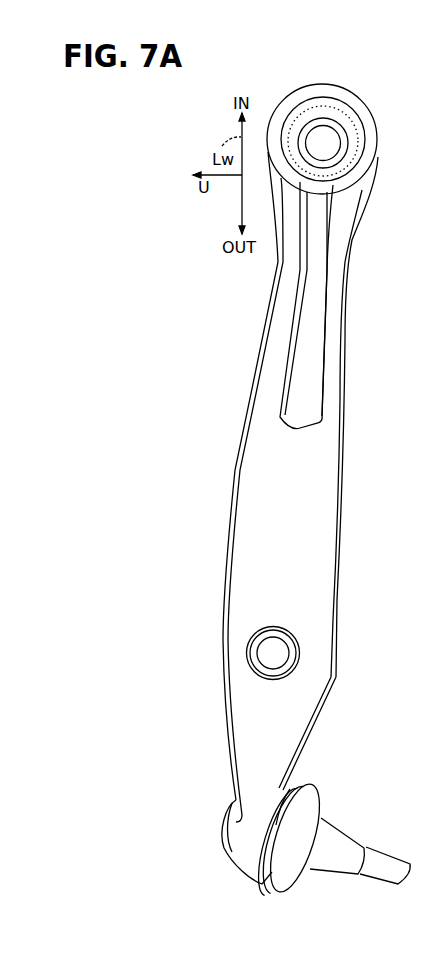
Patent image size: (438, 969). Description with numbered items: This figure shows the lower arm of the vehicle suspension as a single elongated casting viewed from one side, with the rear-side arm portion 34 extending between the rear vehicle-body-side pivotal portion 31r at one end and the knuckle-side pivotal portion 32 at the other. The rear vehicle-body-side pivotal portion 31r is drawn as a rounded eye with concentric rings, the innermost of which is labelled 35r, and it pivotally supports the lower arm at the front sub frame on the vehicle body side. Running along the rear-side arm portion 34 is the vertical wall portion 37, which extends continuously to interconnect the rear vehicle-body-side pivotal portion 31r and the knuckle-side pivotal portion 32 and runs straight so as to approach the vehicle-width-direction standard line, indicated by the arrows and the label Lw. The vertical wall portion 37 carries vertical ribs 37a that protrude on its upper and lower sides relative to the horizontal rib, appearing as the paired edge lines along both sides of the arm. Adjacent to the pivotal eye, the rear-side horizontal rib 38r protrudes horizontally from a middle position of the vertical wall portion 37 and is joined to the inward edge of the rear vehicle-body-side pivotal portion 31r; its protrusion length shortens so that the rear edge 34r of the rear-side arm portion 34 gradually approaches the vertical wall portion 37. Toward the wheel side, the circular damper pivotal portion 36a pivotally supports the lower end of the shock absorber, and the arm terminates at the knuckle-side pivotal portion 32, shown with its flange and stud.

The rear vehicle-body-side pivotal portion 31r is at (377, 160).
The inner cylinder of bushing 35r is at (357, 124).
The rear-side arm portion 34 is at (340, 537).
The rear edge 34r is at (320, 578).
The vertical wall portion 37 is at (333, 453).
The vertical rib 37a is at (266, 310).
The rear-side horizontal rib 38r is at (328, 322).
The damper pivotal portion 36a is at (300, 658).
The knuckle-side pivotal portion 32 is at (320, 797).